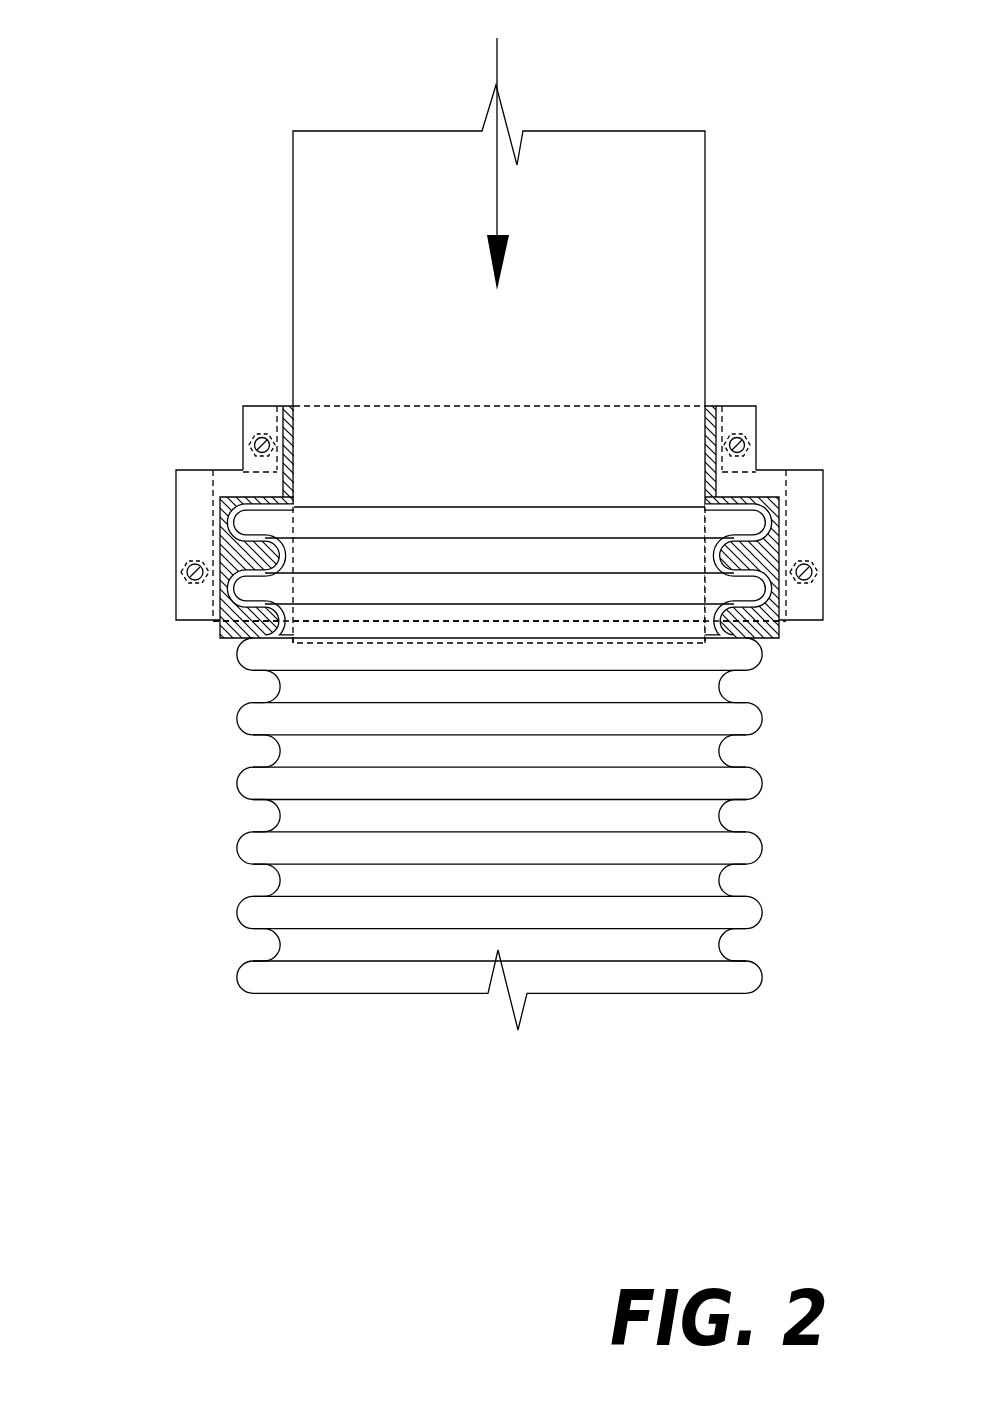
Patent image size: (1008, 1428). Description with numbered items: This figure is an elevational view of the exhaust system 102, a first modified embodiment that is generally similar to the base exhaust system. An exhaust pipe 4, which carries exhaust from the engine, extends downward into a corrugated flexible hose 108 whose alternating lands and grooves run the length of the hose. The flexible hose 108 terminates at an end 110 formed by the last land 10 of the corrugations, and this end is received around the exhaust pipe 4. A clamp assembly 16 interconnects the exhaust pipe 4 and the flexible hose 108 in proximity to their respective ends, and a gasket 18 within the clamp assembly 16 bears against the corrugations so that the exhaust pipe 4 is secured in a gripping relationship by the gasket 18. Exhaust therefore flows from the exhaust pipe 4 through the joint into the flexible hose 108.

The exhaust pipe 4 is at (704, 132).
The land 10 is at (651, 507).
The clamp assembly 16 is at (764, 410).
The gasket 18 is at (777, 638).
The exhaust system 102 is at (190, 263).
The flexible hose 108 is at (748, 993).
The end 110 is at (357, 507).